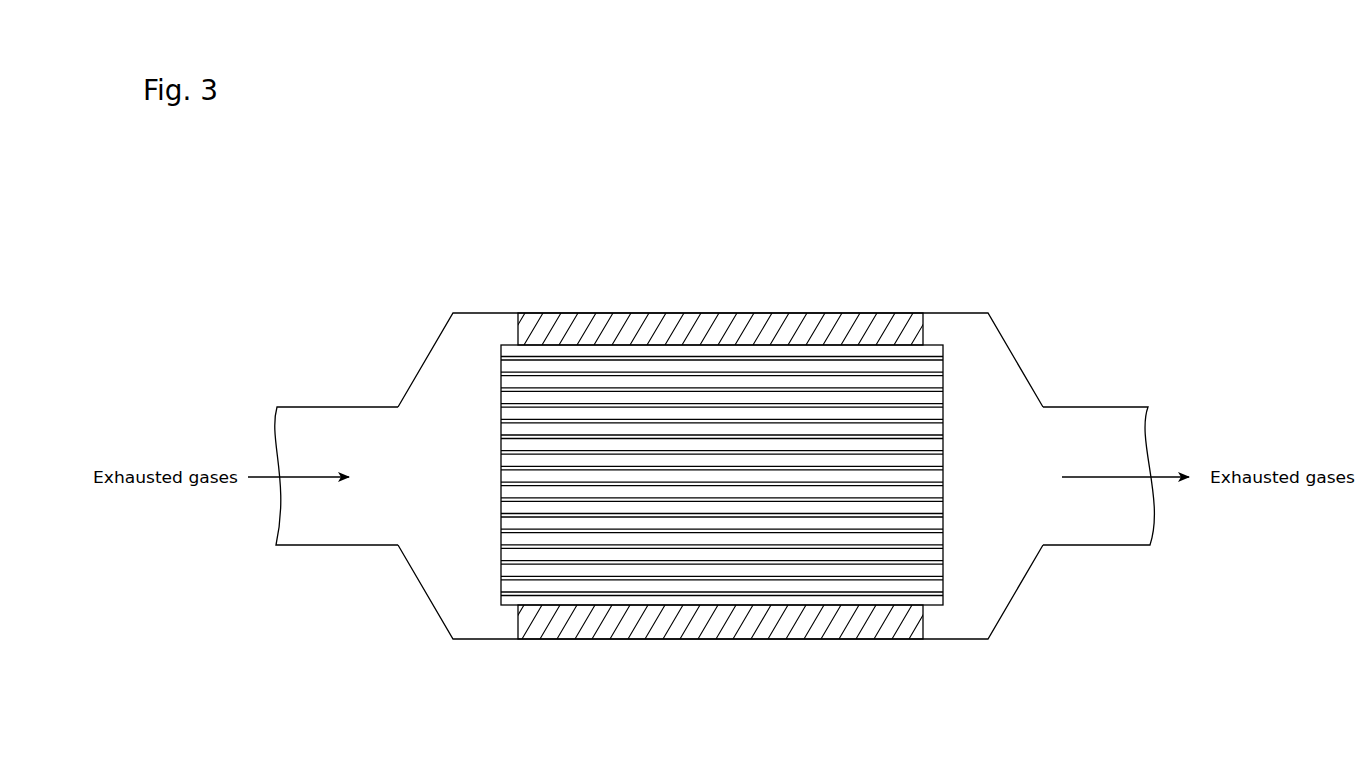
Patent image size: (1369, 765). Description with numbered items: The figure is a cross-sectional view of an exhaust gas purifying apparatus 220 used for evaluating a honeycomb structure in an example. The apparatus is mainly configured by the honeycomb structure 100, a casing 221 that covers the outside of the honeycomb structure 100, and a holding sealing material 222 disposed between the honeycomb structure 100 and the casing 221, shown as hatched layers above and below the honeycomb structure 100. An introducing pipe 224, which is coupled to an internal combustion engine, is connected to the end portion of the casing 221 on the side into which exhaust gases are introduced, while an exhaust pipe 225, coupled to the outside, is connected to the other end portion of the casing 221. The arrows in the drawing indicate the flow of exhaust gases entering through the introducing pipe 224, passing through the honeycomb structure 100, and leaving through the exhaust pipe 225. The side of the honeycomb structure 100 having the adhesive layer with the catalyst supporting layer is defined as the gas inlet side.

The exhaust gas purifying apparatus 220 is at (851, 219).
The casing 221 is at (963, 640).
The holding sealing material 222 is at (602, 328).
The introducing pipe 224 is at (288, 426).
The exhaust pipe 225 is at (1118, 434).
The honeycomb structure 100 is at (965, 379).